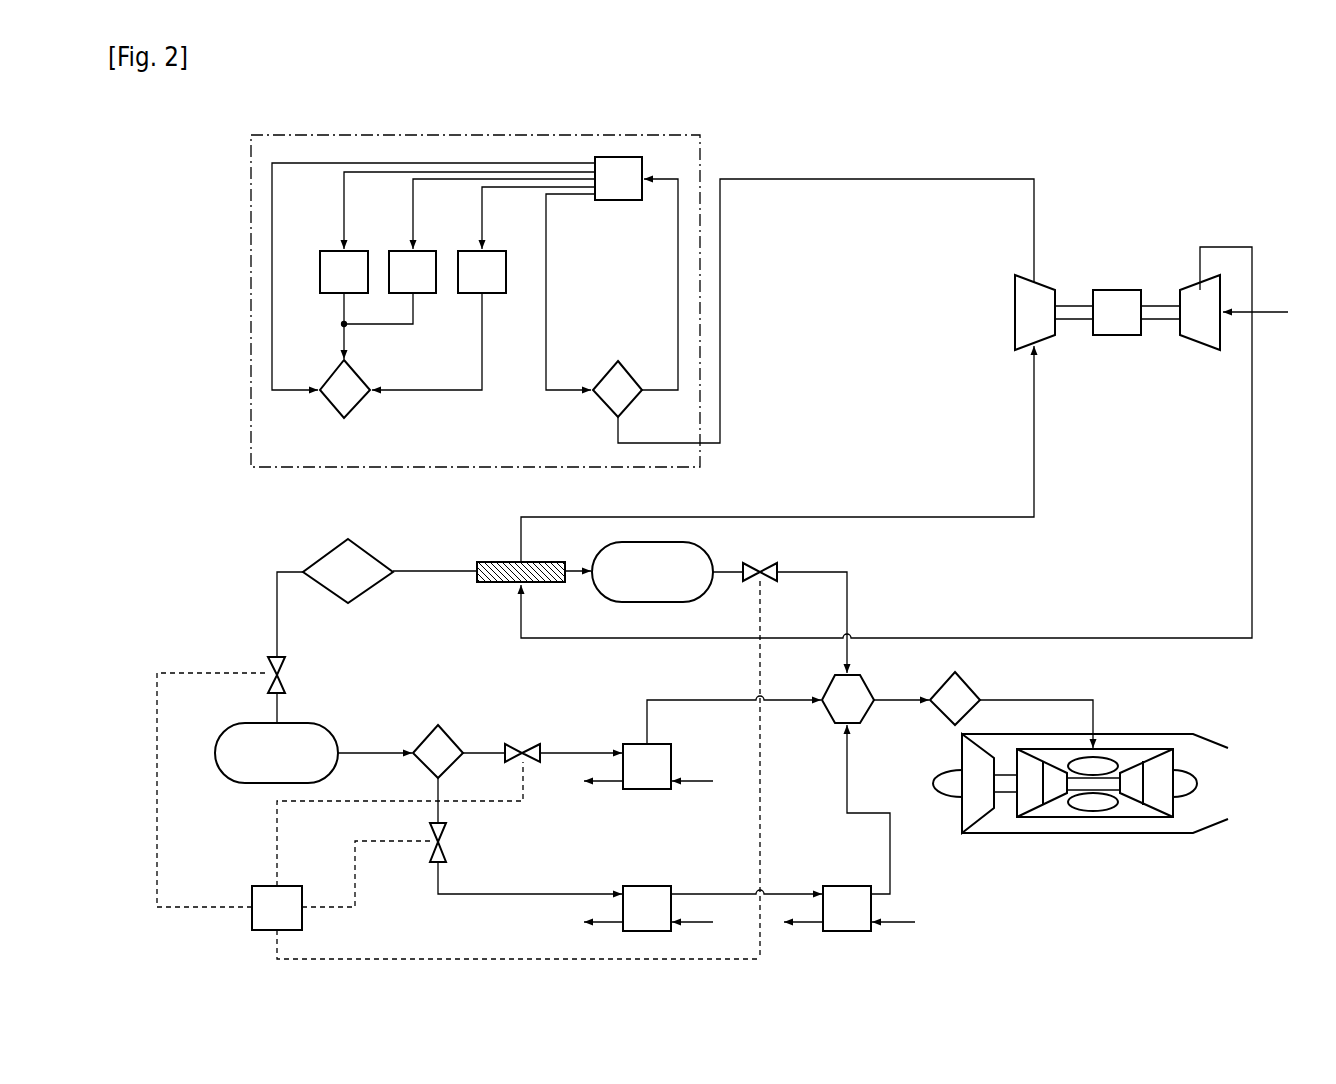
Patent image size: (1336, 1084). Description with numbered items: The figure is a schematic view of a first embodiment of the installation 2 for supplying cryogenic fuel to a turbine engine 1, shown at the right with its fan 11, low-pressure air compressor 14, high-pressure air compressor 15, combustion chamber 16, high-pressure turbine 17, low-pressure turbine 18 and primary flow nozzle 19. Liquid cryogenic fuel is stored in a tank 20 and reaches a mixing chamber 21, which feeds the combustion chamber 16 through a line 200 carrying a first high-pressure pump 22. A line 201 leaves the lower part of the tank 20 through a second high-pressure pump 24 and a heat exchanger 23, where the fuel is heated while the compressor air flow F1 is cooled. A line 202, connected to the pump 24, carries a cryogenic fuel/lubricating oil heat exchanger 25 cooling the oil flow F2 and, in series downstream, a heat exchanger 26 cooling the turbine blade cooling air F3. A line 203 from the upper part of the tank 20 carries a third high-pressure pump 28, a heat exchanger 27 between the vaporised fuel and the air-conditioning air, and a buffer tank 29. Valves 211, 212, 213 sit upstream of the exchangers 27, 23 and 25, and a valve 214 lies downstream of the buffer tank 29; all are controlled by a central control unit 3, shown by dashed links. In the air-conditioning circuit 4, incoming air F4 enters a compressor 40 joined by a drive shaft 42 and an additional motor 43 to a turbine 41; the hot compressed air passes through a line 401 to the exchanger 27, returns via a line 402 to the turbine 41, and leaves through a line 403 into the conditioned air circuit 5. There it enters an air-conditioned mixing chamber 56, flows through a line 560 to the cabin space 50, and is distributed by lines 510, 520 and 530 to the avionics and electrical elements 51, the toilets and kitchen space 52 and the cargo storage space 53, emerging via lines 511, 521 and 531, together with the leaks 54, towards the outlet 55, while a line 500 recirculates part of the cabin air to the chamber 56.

The turbine engine 1 is at (1131, 708).
The installation for supplying cryogenic fuel 2 is at (384, 498).
The central control unit 3 is at (506, 922).
The air-conditioning circuit 4 is at (1160, 205).
The conditioned air circuit 5 is at (250, 285).
The fan 11 is at (978, 786).
The low-pressure air compressor 14 is at (1030, 786).
The high-pressure air compressor 15 is at (1058, 786).
The combustion chamber 16 is at (1093, 806).
The high-pressure turbine 17 is at (1130, 786).
The low-pressure turbine 18 is at (1158, 786).
The primary flow nozzle 19 is at (1212, 783).
The tank 20 is at (276, 753).
The mixing chamber 21 is at (848, 699).
The first high-pressure pump 22 is at (955, 698).
The heat exchanger 23 is at (627, 766).
The second high-pressure pump 24 is at (438, 751).
The cryogenic fuel/lubricating oil heat exchanger 25 is at (627, 908).
The heat exchanger 26 is at (827, 908).
The heat exchanger 27 is at (502, 583).
The third high-pressure pump 28 is at (348, 571).
The buffer tank 29 is at (652, 572).
The line 200 is at (898, 699).
The line 201 is at (372, 752).
The line 202 is at (577, 893).
The line 203 is at (428, 570).
The valve 211 is at (285, 678).
The valve 212 is at (528, 745).
The valve 213 is at (447, 850).
The valve 214 is at (752, 582).
The compressor 40 is at (1200, 312).
The turbine 41 is at (1035, 312).
The drive shaft 42 is at (1075, 306).
The additional motor 43 is at (1117, 312).
The line 401 is at (1252, 463).
The line 402 is at (930, 517).
The line 403 is at (930, 179).
The cabin space 50 is at (618, 178).
The avionics and electrical elements 51 is at (482, 272).
The toilets and kitchen space 52 is at (412, 272).
The cargo storage space 53 is at (344, 272).
The leaks 54 is at (272, 221).
The outlet 55 is at (345, 389).
The air-conditioned mixing chamber 56 is at (617, 389).
The line 500 is at (546, 285).
The line 510 is at (482, 221).
The line 511 is at (482, 318).
The line 520 is at (413, 221).
The line 521 is at (413, 318).
The line 530 is at (344, 221).
The line 531 is at (344, 324).
The line 560 is at (678, 287).
The compressor air flow F1 is at (697, 783).
The lubricating oil flow F2 is at (697, 923).
The cooling air flow F3 is at (898, 923).
The incoming air F4 is at (1288, 312).